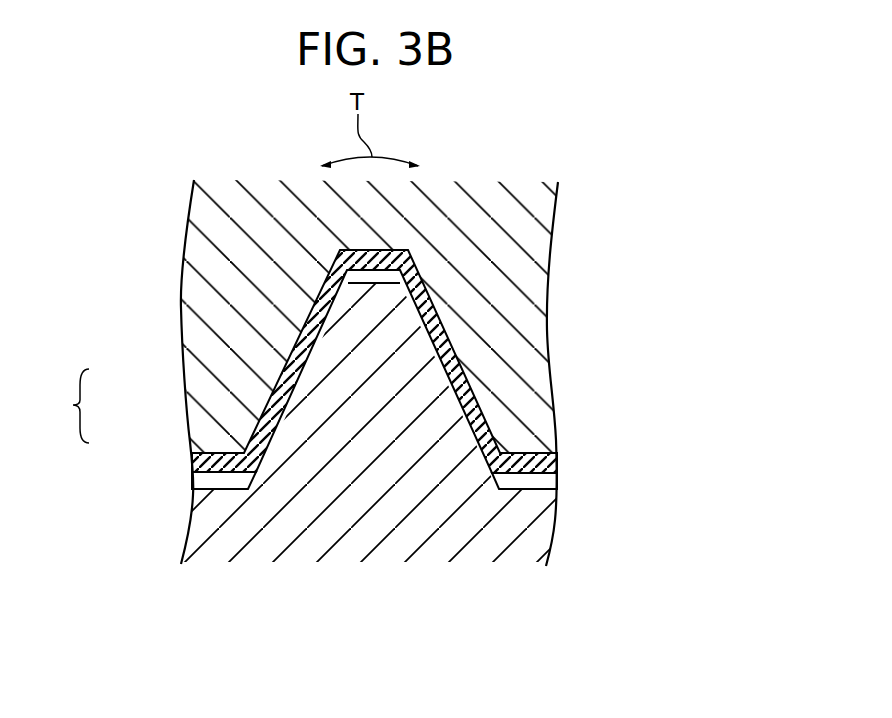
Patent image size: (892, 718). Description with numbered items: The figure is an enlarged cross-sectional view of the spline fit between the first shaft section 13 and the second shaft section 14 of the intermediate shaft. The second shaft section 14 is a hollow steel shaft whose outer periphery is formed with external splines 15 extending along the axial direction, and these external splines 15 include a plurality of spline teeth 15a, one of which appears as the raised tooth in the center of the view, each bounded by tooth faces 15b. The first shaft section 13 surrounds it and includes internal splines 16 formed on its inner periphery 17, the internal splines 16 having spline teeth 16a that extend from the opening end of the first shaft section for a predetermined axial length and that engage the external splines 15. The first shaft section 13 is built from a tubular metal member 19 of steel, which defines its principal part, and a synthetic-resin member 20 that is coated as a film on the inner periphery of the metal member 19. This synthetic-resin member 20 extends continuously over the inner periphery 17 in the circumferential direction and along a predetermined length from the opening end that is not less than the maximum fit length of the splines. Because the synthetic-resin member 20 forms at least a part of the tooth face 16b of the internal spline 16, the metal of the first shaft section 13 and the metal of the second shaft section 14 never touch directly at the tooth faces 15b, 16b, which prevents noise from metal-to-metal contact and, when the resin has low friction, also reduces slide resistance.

The first shaft section 13 is at (63, 406).
The second shaft section 14 is at (560, 528).
The external splines 15 is at (389, 512).
The spline teeth 15a is at (375, 370).
The tooth face 15b is at (303, 330).
The internal splines 16 is at (560, 397).
The spline teeth 16a is at (517, 348).
The tooth face 16b is at (296, 392).
The inner periphery 17 is at (523, 482).
The metal member 19 is at (198, 388).
The synthetic-resin member 20 is at (199, 462).